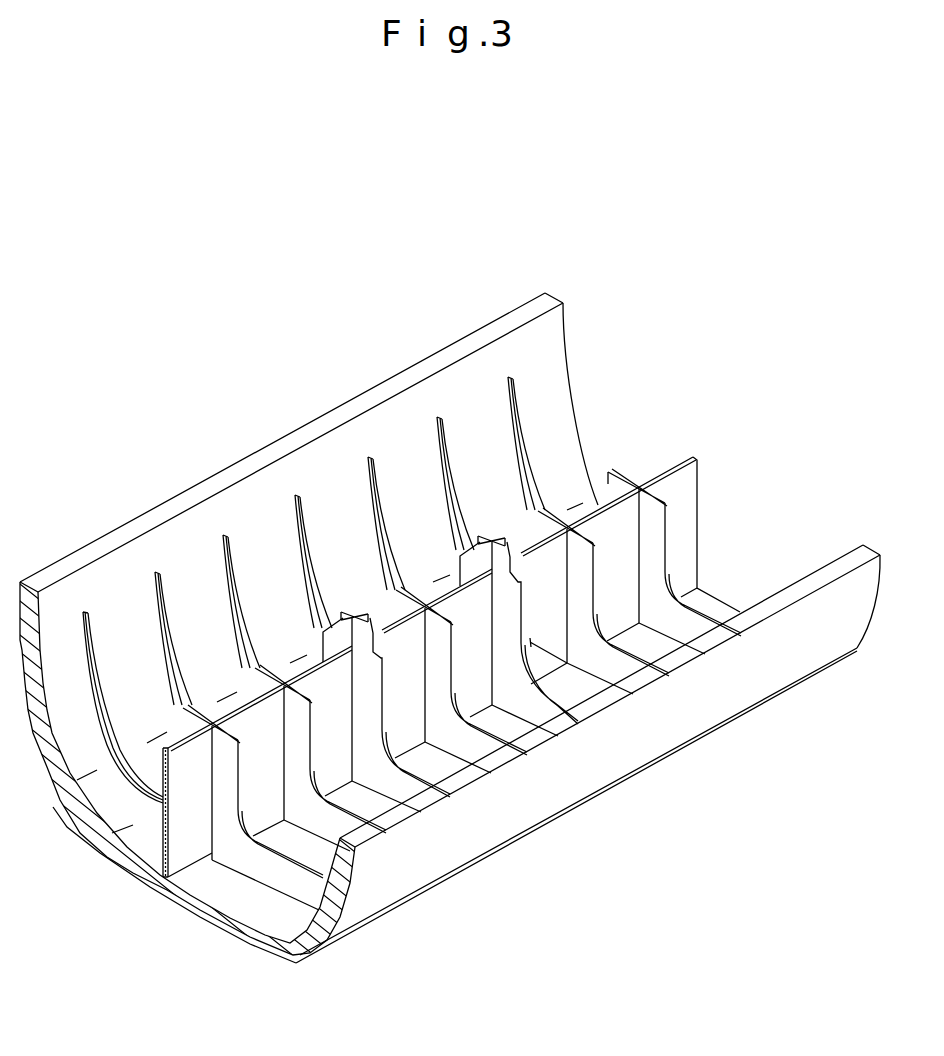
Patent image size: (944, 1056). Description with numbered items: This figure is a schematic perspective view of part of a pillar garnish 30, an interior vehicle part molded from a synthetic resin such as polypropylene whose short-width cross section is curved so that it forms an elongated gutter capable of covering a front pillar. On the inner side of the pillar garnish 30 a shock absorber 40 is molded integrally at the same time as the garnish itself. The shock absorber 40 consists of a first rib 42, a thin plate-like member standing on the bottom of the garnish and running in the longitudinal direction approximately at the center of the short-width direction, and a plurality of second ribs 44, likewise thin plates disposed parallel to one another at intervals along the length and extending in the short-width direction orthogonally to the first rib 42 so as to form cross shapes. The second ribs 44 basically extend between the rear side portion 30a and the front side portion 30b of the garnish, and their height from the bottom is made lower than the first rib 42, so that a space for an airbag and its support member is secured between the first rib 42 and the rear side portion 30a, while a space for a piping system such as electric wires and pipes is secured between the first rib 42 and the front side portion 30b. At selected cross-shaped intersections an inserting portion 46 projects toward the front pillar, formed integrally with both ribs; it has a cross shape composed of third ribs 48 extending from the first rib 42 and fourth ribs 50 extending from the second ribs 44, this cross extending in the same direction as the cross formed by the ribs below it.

The pillar garnish 30 is at (467, 885).
The rear side portion 30a is at (650, 722).
The front side portion 30b is at (315, 419).
The shock absorber 40 is at (477, 602).
The first rib 42 is at (685, 507).
The second ribs 44 is at (437, 418).
The inserting portion 46 is at (358, 600).
The third ribs 48 is at (343, 615).
The fourth ribs 50 is at (370, 612).